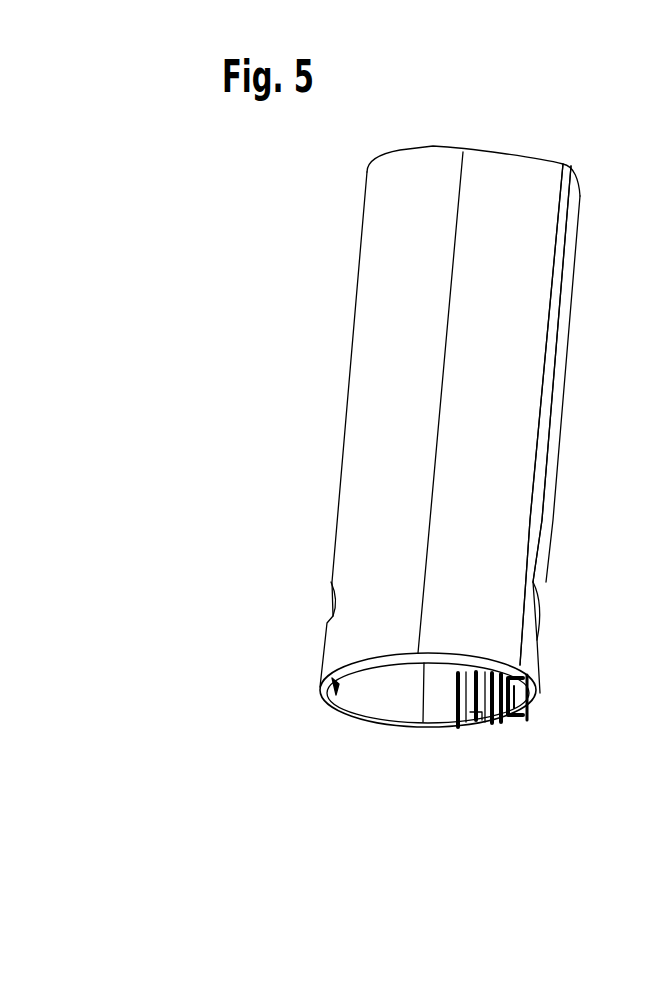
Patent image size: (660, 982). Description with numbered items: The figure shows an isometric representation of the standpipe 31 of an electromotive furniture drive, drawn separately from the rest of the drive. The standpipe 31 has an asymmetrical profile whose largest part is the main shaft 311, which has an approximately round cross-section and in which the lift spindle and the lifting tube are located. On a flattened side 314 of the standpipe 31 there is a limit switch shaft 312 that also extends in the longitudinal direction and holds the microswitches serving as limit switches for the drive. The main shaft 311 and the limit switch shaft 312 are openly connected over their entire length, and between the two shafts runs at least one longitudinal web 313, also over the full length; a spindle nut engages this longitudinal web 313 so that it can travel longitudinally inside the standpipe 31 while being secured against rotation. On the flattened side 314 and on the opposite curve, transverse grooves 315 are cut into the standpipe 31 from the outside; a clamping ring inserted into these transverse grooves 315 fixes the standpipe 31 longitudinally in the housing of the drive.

The standpipe 31 is at (550, 143).
The main shaft 311 is at (389, 704).
The limit switch shaft 312 is at (507, 709).
The longitudinal web 313 is at (476, 715).
The flattened side 314 is at (553, 462).
The transverse grooves 315 is at (332, 613).